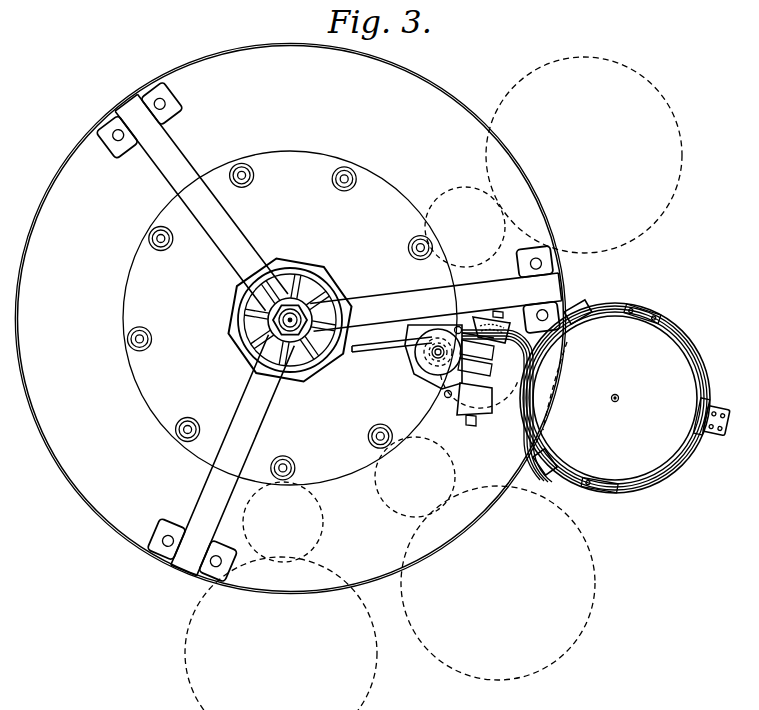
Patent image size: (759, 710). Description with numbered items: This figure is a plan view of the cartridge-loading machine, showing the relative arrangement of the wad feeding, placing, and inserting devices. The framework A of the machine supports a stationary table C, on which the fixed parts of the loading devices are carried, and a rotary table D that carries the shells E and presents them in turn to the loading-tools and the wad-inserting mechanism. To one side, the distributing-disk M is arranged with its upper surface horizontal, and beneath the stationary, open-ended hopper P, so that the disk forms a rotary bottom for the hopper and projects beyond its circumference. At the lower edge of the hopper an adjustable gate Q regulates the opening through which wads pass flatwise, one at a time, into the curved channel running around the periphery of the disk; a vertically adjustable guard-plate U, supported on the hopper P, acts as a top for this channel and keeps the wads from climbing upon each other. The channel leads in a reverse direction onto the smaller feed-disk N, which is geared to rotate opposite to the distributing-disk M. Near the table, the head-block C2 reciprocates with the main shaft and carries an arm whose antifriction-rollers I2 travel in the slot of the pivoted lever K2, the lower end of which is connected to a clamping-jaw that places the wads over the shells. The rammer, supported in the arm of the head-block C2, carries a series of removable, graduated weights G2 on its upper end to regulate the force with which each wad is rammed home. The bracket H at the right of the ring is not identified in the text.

The framework A is at (104, 116).
The stationary table C is at (426, 96).
The rotary table D is at (290, 318).
The shells E is at (348, 184).
The head-block C2 is at (315, 371).
The antifriction-rollers I2 is at (391, 346).
The weights G2 is at (433, 367).
The feed-disk N is at (455, 392).
The lever K2 is at (505, 397).
The guard-plate U is at (652, 324).
The adjustable gate Q is at (593, 314).
The hopper P is at (656, 316).
The distributing-disk M is at (330, 665).
The bracket H is at (658, 478).